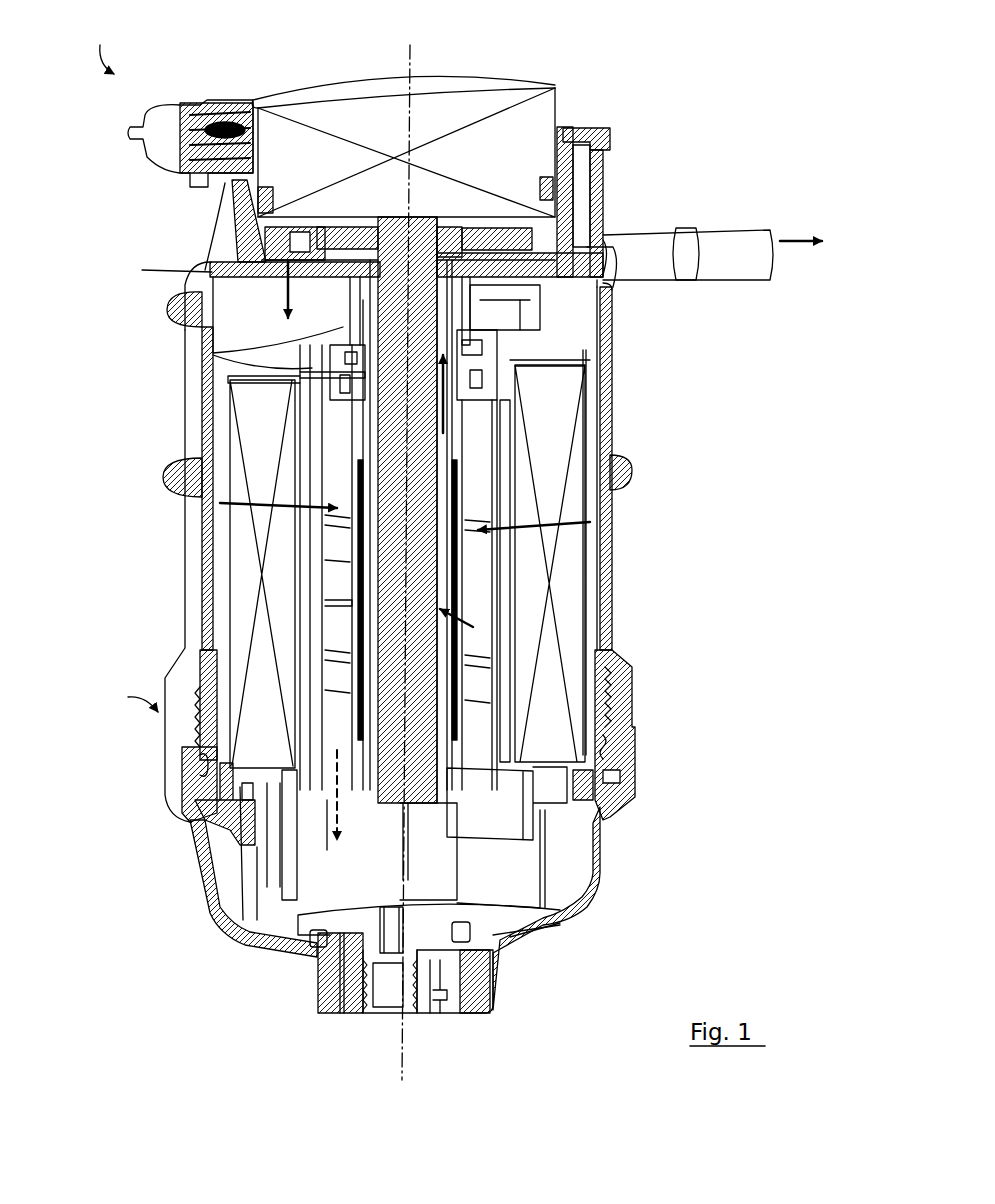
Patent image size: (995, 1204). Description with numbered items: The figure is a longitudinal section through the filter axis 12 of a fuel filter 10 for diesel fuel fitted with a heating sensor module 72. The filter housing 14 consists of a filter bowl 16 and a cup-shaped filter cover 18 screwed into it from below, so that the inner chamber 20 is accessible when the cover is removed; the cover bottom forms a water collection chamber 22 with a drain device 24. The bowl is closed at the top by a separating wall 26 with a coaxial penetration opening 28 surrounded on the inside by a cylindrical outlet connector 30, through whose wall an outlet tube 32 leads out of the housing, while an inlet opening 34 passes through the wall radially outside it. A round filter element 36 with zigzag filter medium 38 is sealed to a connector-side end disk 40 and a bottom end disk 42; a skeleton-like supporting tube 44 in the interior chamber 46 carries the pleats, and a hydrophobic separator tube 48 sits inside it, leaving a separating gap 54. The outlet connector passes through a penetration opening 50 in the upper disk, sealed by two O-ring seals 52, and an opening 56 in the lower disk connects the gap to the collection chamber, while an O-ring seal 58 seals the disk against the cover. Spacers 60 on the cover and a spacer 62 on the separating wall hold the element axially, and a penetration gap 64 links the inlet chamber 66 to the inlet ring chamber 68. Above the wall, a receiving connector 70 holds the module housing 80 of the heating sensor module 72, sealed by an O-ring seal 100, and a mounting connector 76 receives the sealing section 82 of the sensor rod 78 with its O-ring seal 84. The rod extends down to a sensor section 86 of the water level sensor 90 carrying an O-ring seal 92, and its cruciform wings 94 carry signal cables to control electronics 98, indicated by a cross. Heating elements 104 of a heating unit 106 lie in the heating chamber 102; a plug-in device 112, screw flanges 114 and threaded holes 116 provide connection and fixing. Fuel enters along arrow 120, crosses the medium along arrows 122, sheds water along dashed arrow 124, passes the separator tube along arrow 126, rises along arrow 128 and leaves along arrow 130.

The fuel filter 10 is at (100, 44).
The filter axis 12 is at (409, 50).
The filter housing 14 is at (125, 697).
The filter bowl 16 is at (190, 638).
The filter cover 18 is at (585, 880).
The inner chamber 20 is at (588, 343).
The water collection chamber 22 is at (333, 894).
The drain device 24 is at (330, 963).
The separating wall 26 is at (185, 270).
The penetration opening 28 is at (355, 305).
The outlet connector 30 is at (460, 316).
The outlet tube 32 is at (742, 262).
The inlet opening 34 is at (275, 262).
The round filter element 36 is at (600, 564).
The filter medium 38 is at (273, 754).
The connector-side end disk 40 is at (588, 358).
The bottom end disk 42 is at (600, 770).
The supporting tube 44 is at (475, 660).
The interior chamber 46 is at (350, 614).
The separator tube 48 is at (345, 672).
The penetration opening 50 is at (345, 372).
The O-ring seals 52 is at (358, 410).
The separating gap 54 is at (338, 542).
The opening 56 is at (480, 772).
The O-ring seal 58 is at (187, 820).
The spacers 60 is at (565, 925).
The spacer 62 is at (502, 295).
The penetration gap 64 is at (320, 388).
The inlet chamber 66 is at (230, 288).
The inlet ring chamber 68 is at (595, 620).
The receiving connector 70 is at (585, 175).
The heating sensor module 72 is at (560, 97).
The mounting connector 76 is at (355, 220).
The sensor rod 78 is at (430, 487).
The module housing 80 is at (318, 95).
The sealing section 82 is at (395, 217).
The O-ring seal 84 is at (432, 218).
The sensor section 86 is at (470, 812).
The water level sensor 90 is at (425, 805).
The O-ring seal 92 is at (367, 797).
The wings 94 is at (385, 566).
The control electronics 98 is at (525, 130).
The O-ring seal 100 is at (240, 192).
The heating chamber 102 is at (540, 210).
The heating elements 104 is at (500, 215).
The heating unit 106 is at (308, 223).
The plug-in device 112 is at (150, 130).
The screw flanges 114 is at (608, 135).
The threaded holes 116 is at (590, 190).
The arrow 120 is at (278, 323).
The arrows 122 is at (205, 470).
The dashed arrow 124 is at (327, 812).
The arrow 126 is at (620, 676).
The arrow 128 is at (478, 433).
The arrow 130 is at (790, 238).